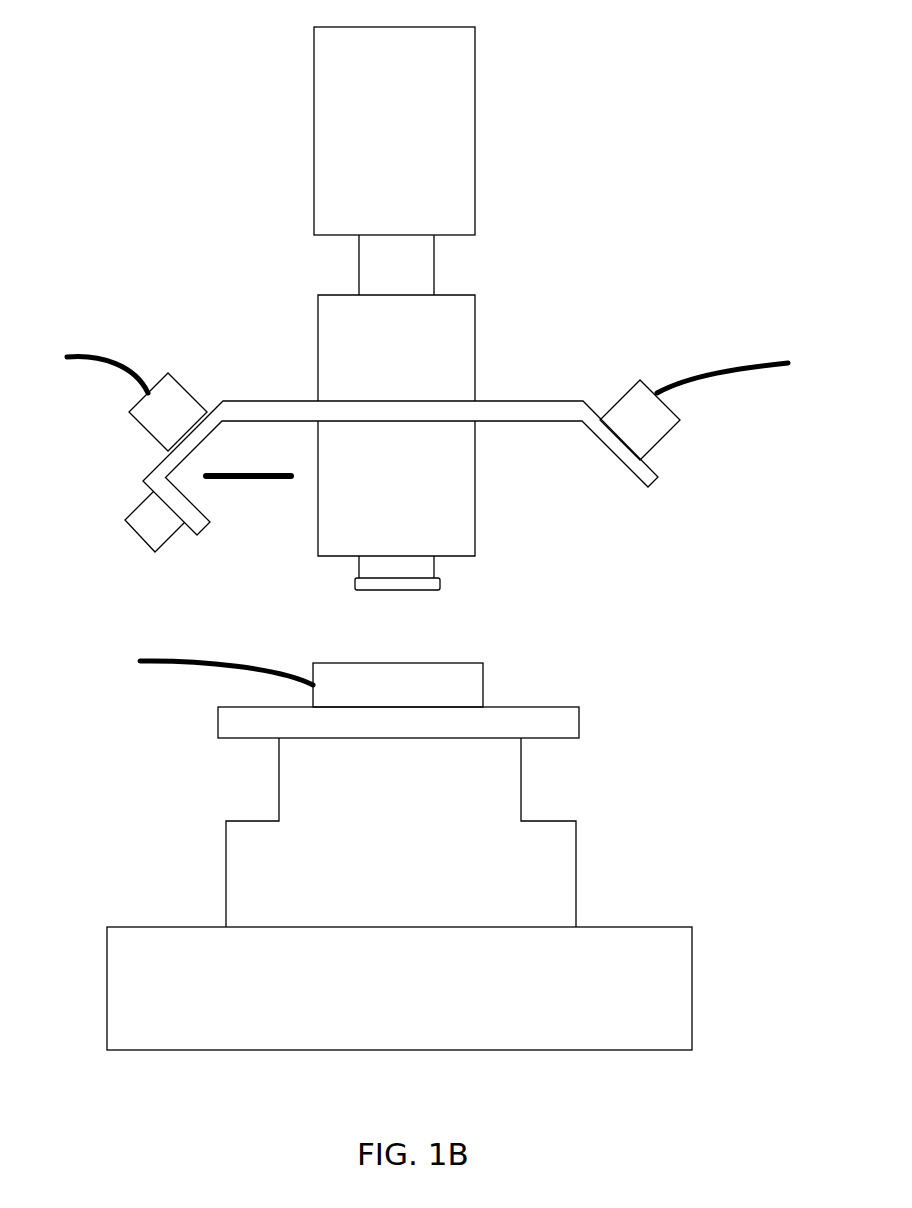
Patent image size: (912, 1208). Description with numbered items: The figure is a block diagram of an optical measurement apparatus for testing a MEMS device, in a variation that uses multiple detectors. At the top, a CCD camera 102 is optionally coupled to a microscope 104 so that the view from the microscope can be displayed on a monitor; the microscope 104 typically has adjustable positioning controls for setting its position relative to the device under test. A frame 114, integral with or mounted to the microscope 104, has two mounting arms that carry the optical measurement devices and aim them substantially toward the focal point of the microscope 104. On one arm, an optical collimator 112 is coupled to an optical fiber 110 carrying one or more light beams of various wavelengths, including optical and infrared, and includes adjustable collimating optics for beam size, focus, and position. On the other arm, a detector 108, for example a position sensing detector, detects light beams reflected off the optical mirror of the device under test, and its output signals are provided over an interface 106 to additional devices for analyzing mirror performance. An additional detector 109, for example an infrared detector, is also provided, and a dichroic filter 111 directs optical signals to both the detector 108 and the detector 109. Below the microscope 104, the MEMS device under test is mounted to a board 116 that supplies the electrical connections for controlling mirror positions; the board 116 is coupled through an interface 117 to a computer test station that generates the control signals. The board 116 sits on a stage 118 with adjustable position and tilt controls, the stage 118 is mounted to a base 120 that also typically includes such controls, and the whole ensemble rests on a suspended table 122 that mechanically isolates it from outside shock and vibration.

The CCD camera 102 is at (492, 123).
The microscope 104 is at (487, 345).
The interface 106 is at (87, 373).
The optical measurement device (detector) 108 is at (148, 435).
The additional detector 109 is at (143, 540).
The optical fiber 110 is at (748, 373).
The dichroic filter 111 is at (257, 488).
The optical measurement device (optical collimator) 112 is at (662, 447).
The frame 114 is at (652, 487).
The board 116 is at (498, 685).
The interface 117 is at (202, 671).
The stage 118 is at (593, 725).
The base 120 is at (577, 843).
The suspended table 122 is at (637, 912).